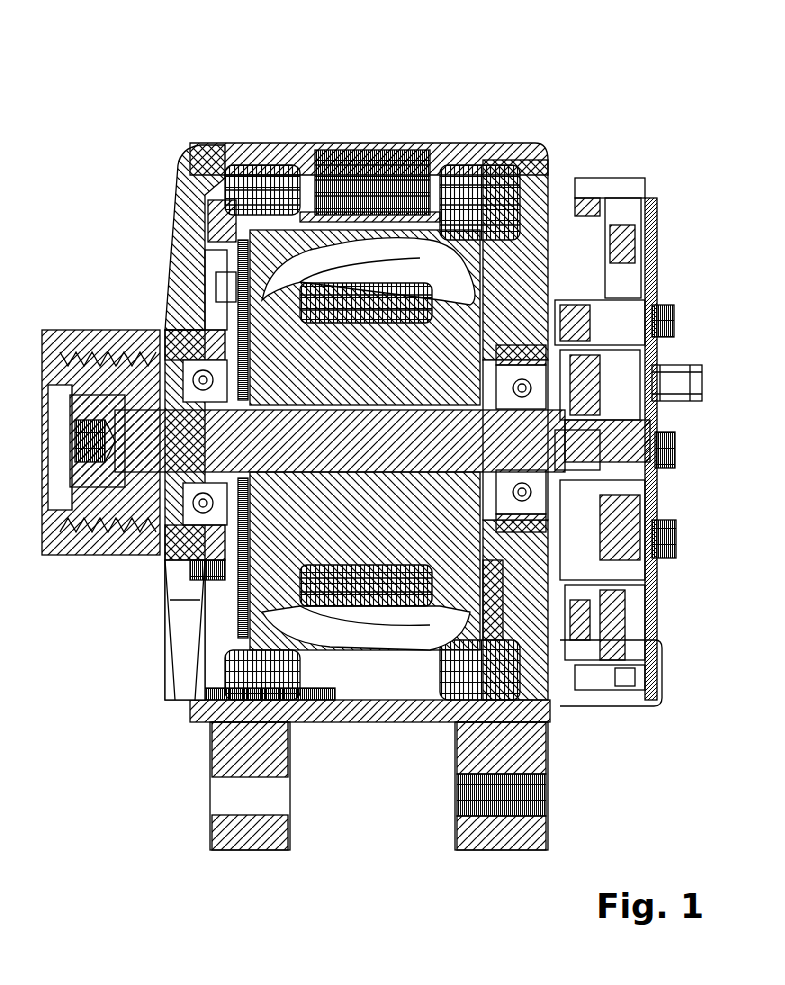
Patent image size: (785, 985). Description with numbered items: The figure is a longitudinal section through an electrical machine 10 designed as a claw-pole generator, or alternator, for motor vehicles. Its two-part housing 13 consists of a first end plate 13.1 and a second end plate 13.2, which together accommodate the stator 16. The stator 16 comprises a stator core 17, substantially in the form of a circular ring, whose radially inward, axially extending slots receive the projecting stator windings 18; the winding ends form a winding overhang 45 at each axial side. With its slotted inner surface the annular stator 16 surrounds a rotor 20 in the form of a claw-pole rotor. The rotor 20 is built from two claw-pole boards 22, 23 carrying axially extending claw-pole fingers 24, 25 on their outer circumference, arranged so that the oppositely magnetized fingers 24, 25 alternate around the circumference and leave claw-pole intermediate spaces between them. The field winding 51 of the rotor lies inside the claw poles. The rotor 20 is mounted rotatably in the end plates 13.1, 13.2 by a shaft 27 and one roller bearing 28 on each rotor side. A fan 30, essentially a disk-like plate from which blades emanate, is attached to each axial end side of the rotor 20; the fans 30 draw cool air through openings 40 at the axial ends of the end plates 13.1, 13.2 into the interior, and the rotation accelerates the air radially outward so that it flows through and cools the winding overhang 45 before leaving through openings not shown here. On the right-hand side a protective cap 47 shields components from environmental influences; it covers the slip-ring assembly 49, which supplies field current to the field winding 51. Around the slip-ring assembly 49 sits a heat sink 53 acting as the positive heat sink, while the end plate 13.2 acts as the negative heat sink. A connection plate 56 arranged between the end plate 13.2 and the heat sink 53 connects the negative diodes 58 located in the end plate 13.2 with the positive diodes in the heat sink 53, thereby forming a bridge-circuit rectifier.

The electrical machine 10 is at (603, 78).
The housing 13 is at (166, 128).
The first end plate 13.1 is at (210, 146).
The second end plate 13.2 is at (526, 150).
The stator 16 is at (388, 130).
The stator core 17 is at (330, 148).
The stator windings 18 is at (430, 150).
The rotor 20 is at (258, 634).
The claw-pole board 22 is at (262, 380).
The claw-pole board 23 is at (452, 636).
The claw-pole fingers 24 is at (358, 250).
The claw-pole fingers 25 is at (452, 262).
The shaft 27 is at (150, 462).
The roller bearing 28 is at (205, 350).
The fan 30 is at (214, 262).
The openings 40 is at (180, 296).
The winding overhang 45 is at (490, 148).
The protective cap 47 is at (656, 620).
The slip-ring assembly 49 is at (641, 477).
The field winding 51 is at (395, 672).
The heat sink 53 is at (640, 275).
The connection plate 56 is at (640, 592).
The negative diodes 58 is at (580, 684).